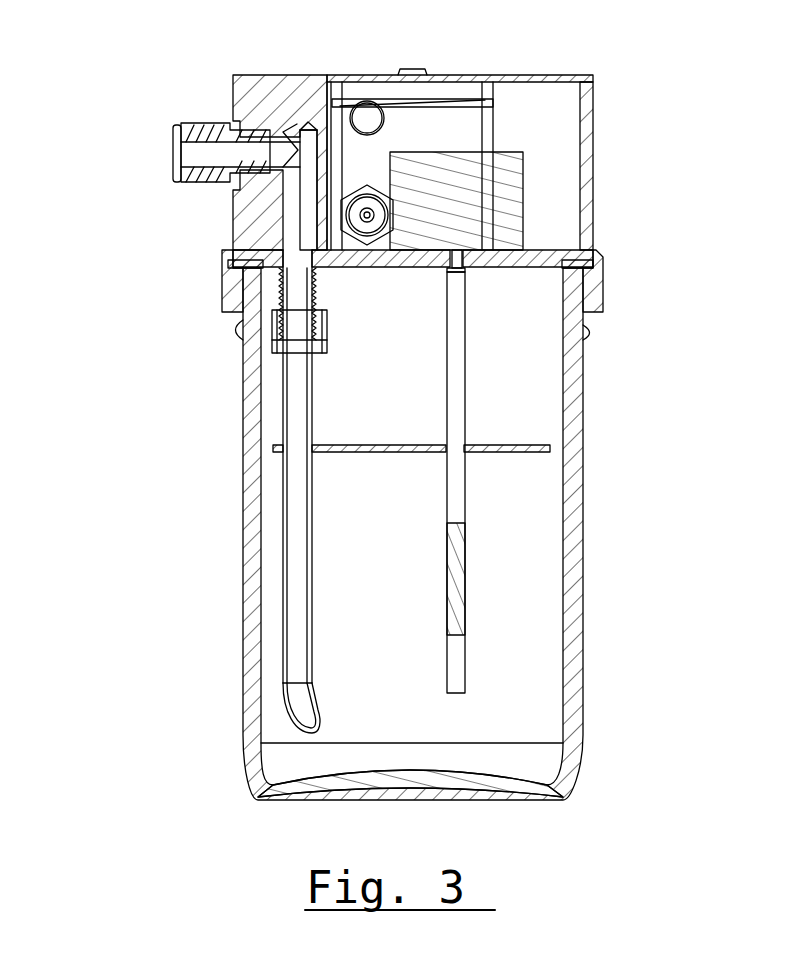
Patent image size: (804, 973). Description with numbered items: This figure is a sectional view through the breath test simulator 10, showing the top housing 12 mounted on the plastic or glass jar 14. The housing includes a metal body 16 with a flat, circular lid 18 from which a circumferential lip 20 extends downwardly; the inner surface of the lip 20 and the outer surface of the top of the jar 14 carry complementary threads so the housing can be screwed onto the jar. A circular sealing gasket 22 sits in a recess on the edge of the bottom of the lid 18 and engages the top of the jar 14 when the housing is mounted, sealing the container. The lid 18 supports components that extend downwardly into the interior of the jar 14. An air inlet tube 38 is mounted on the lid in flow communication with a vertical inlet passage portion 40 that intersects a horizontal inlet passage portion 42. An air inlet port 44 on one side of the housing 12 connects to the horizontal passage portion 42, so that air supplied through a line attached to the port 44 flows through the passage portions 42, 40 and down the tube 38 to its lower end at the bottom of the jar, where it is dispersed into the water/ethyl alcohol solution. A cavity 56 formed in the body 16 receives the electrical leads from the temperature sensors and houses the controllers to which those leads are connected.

The breath test simulator 10 is at (127, 95).
The top housing 12 is at (597, 74).
The jar 14 is at (583, 488).
The metal body 16 is at (596, 142).
The lid 18 is at (497, 272).
The circumferential lip 20 is at (603, 290).
The sealing gasket 22 is at (577, 262).
The air inlet tube 38 is at (313, 405).
The vertical inlet passage portion 40 is at (290, 205).
The horizontal inlet passage portion 42 is at (282, 143).
The air inlet port 44 is at (207, 128).
The cavity 56 is at (557, 130).